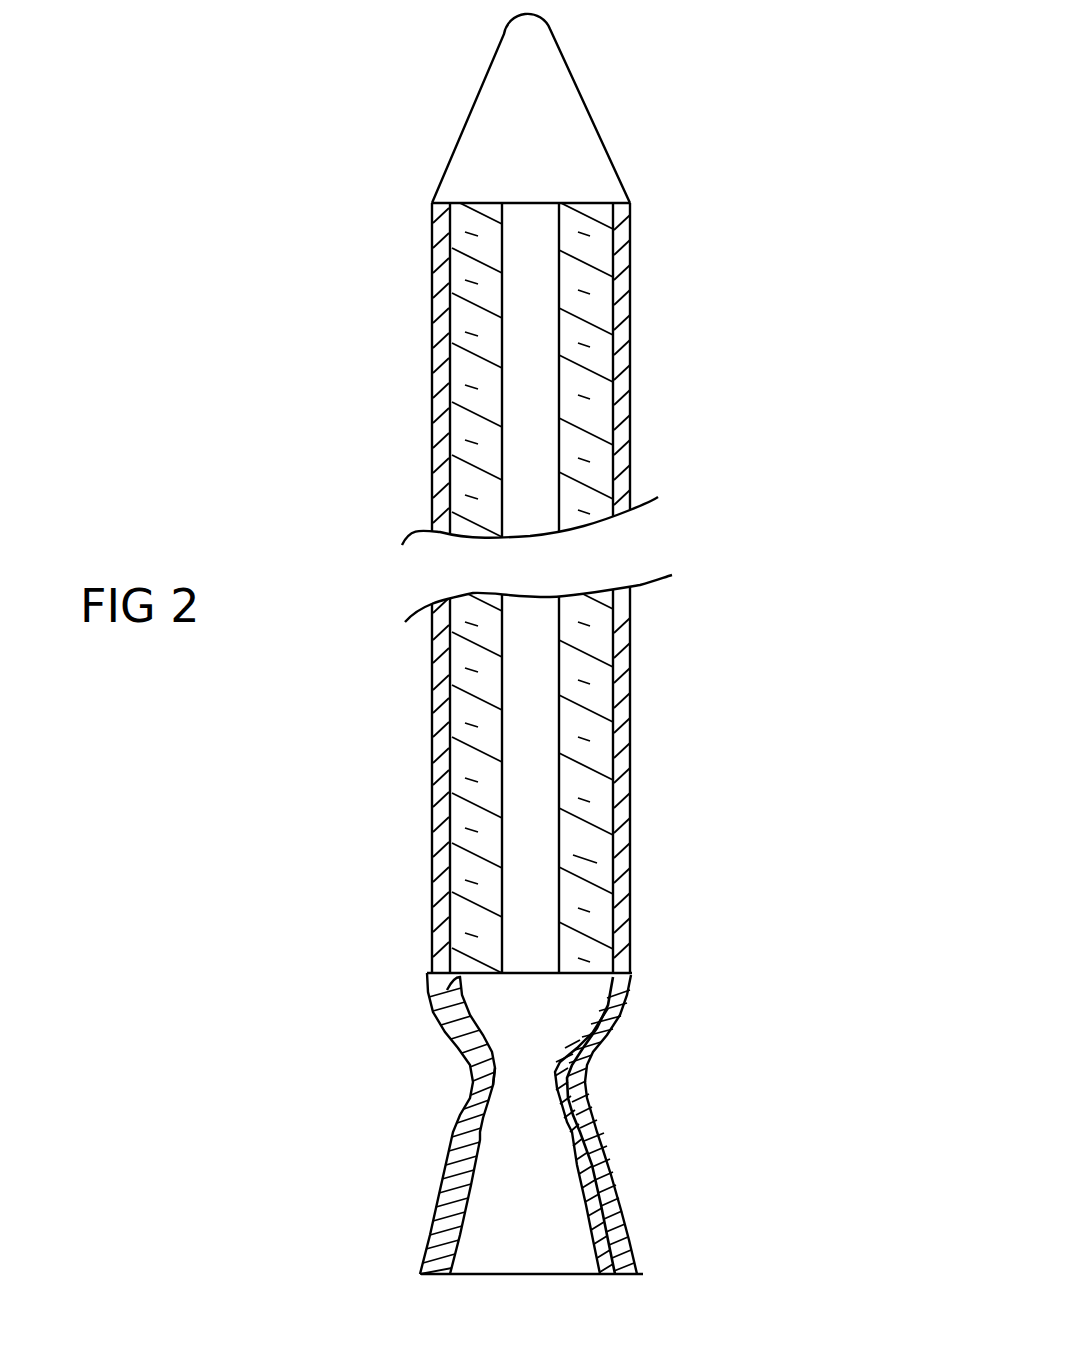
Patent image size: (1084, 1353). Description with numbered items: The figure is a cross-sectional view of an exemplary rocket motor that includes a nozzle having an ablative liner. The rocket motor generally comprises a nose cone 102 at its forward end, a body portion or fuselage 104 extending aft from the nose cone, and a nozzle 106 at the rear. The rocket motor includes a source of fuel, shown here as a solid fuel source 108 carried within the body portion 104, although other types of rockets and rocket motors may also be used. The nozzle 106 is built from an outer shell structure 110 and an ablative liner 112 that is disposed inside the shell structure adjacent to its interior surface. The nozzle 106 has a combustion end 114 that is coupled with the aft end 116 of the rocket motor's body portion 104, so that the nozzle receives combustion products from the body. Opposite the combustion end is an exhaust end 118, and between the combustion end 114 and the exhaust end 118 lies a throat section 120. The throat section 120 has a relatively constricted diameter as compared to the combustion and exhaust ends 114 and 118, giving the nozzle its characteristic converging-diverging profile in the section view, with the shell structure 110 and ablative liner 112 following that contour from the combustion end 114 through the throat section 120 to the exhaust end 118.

The nose cone 102 is at (592, 108).
The body portion 104 is at (632, 418).
The nozzle 106 is at (460, 1275).
The solid fuel source 108 is at (560, 660).
The outer shell structure 110 is at (595, 1112).
The ablative liner 112 is at (573, 1028).
The combustion end 114 is at (637, 988).
The aft end 116 is at (632, 950).
The exhaust end 118 is at (640, 1264).
The throat section 120 is at (590, 1067).